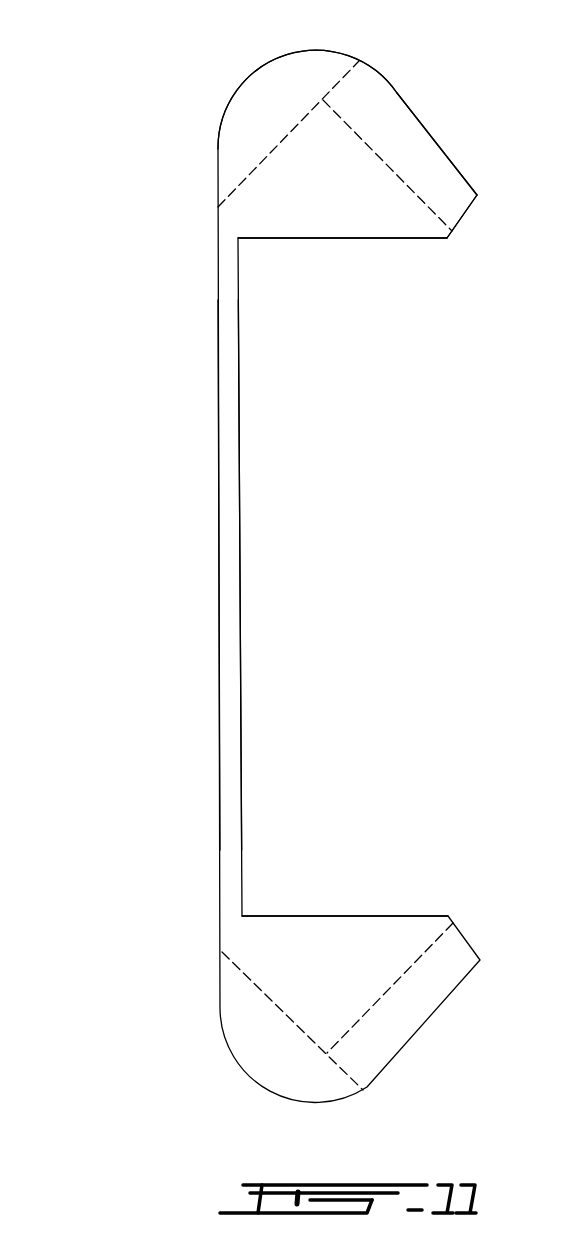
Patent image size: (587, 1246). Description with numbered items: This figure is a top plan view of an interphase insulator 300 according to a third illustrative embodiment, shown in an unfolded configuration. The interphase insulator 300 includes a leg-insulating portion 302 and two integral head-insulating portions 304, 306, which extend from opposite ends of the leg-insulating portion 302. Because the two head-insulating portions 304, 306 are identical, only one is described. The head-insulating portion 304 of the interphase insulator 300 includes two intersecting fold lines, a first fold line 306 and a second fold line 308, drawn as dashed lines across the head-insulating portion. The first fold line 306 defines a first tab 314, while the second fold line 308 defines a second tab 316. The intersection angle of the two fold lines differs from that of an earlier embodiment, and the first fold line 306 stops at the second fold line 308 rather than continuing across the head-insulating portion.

The interphase insulator 300 is at (150, 666).
The leg-insulating portion 302 is at (232, 573).
The head-insulating portion 304 is at (342, 250).
The first fold line 306 is at (341, 904).
The second fold line 308 is at (265, 160).
The first tab 314 is at (377, 117).
The second tab 316 is at (270, 93).